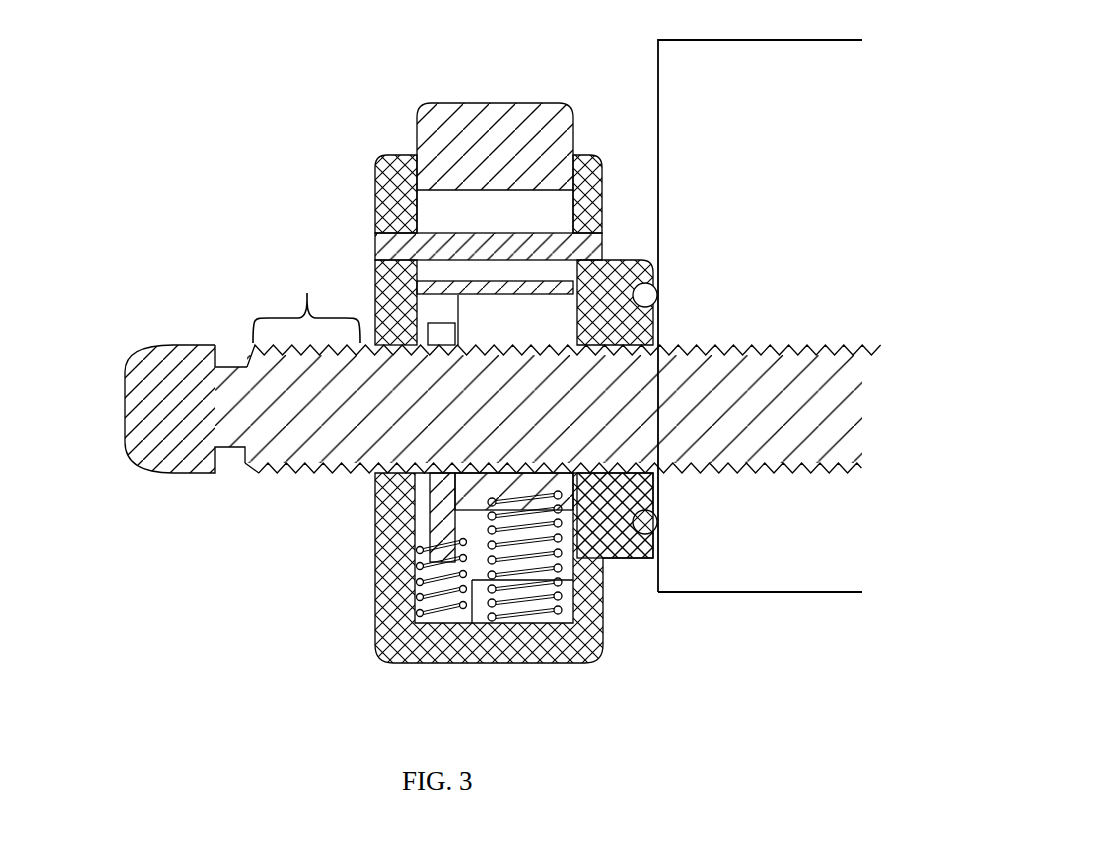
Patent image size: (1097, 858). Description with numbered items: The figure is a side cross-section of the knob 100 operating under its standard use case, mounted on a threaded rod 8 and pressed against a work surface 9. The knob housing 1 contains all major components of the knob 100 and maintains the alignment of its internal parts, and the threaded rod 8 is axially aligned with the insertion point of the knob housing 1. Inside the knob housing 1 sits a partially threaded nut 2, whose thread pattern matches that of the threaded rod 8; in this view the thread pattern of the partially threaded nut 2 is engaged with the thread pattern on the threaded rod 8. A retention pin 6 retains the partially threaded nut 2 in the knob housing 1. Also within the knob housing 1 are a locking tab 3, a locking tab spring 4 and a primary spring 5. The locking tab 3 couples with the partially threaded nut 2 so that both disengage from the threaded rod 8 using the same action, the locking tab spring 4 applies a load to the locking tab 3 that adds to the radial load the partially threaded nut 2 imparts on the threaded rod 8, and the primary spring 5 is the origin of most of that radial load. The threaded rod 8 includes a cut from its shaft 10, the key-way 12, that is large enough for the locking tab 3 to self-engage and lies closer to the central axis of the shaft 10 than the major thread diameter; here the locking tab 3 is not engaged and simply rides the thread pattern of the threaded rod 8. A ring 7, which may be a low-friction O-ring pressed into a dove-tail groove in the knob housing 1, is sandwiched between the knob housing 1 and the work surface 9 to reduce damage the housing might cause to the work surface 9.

The knob 100 is at (150, 138).
The knob housing 1 is at (372, 190).
The partially threaded nut 2 is at (430, 118).
The locking tab 3 is at (430, 350).
The locking tab spring 4 is at (413, 578).
The primary spring 5 is at (560, 583).
The retention pin 6 is at (573, 235).
The ring 7 is at (652, 288).
The threaded rod 8 is at (195, 405).
The work surface 9 is at (660, 127).
The shaft 10 is at (255, 377).
The key-way 12 is at (306, 304).